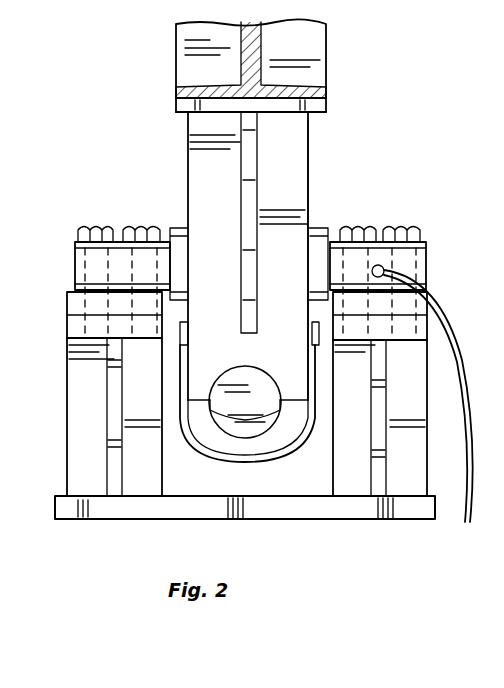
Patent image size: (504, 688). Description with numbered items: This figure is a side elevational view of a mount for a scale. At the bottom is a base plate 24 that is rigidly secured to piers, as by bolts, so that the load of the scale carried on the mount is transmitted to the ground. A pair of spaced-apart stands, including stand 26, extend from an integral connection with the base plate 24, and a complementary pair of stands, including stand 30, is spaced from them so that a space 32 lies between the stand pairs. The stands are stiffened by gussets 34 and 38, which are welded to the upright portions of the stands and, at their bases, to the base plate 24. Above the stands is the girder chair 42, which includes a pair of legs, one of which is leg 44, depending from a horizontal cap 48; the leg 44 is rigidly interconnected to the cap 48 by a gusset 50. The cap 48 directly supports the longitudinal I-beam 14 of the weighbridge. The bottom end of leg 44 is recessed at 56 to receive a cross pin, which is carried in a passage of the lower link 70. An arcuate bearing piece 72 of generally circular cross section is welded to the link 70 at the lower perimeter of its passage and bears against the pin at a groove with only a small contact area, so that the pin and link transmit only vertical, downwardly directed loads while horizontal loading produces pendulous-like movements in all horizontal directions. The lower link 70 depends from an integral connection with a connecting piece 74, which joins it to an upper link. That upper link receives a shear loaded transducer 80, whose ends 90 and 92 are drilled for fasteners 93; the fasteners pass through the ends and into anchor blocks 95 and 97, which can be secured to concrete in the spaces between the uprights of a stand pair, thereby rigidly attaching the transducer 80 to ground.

The longitudinal I-beam 14 is at (262, 58).
The horizontal cap 48 is at (326, 104).
The girder chair 42 is at (300, 152).
The leg 44 is at (300, 188).
The gusset 50 is at (262, 258).
The fasteners 93 is at (130, 228).
The transducer end 90 is at (78, 262).
The anchor block 95 is at (75, 303).
The shear loaded transducer 80 is at (427, 246).
The transducer end 92 is at (385, 270).
The anchor block 97 is at (425, 306).
The connecting piece 74 is at (318, 344).
The stand 30 is at (67, 455).
The gusset 38 is at (122, 462).
The stand 26 is at (420, 446).
The gusset 34 is at (386, 470).
The arcuate bearing piece 72 is at (262, 430).
The space 32 is at (284, 494).
The lower link 70 is at (283, 440).
The recess 56 is at (252, 372).
The base plate 24 is at (375, 519).